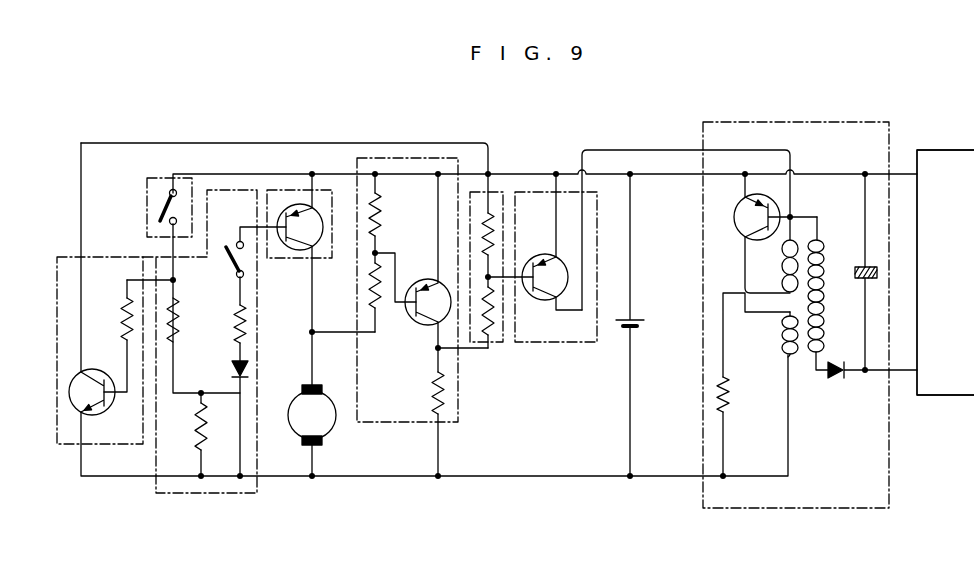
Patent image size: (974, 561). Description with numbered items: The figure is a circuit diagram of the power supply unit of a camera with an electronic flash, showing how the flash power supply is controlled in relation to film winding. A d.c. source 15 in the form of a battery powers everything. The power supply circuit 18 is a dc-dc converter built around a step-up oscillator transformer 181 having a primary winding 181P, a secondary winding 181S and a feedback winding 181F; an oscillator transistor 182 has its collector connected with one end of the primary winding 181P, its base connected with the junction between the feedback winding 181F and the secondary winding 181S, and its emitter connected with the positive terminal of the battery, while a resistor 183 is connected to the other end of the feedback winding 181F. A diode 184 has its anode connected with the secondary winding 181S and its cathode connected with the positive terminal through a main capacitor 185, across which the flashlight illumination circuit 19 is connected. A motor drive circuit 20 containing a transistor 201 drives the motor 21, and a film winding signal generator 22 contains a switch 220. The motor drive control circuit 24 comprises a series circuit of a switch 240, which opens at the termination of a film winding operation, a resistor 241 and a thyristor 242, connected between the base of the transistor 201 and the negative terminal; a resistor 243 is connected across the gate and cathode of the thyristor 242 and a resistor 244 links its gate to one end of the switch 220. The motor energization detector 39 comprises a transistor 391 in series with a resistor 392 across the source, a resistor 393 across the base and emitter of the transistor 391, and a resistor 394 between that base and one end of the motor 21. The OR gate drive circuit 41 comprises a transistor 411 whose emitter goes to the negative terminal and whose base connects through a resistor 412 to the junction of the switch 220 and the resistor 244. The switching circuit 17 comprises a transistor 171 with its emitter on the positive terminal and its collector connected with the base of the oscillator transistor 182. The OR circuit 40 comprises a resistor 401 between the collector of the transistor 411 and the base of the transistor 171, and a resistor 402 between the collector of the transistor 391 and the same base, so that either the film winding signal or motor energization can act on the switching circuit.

The film winding signal generator 22 is at (164, 178).
The switch 220 is at (159, 219).
The OR gate drive circuit 41 is at (57, 398).
The transistor 411 is at (104, 412).
The resistor 412 is at (124, 308).
The motor drive control circuit 24 is at (246, 496).
The switch 240 is at (238, 257).
The resistor 241 is at (234, 327).
The thyristor 242 is at (230, 369).
The resistor 243 is at (198, 425).
The resistor 244 is at (179, 304).
The motor drive circuit 20 is at (332, 243).
The transistor 201 is at (300, 250).
The motor 21 is at (320, 430).
The motor energization detector 39 is at (458, 405).
The transistor 391 is at (421, 282).
The resistor 392 is at (432, 392).
The resistor 393 is at (381, 214).
The resistor 394 is at (378, 304).
The OR circuit 40 is at (493, 345).
The resistor 401 is at (493, 222).
The resistor 402 is at (495, 318).
The switching circuit 17 is at (570, 345).
The transistor 171 is at (546, 258).
The d.c. source 15 is at (644, 323).
The power supply circuit 18 is at (815, 510).
The step-up oscillator transformer 181 is at (800, 364).
The feedback winding 181F is at (788, 268).
The primary winding 181P is at (782, 333).
The secondary winding 181S is at (822, 308).
The oscillator transistor 182 is at (748, 212).
The resistor 183 is at (726, 384).
The diode 184 is at (843, 379).
The main capacitor 185 is at (858, 268).
The flashlight illumination circuit 19 is at (936, 397).